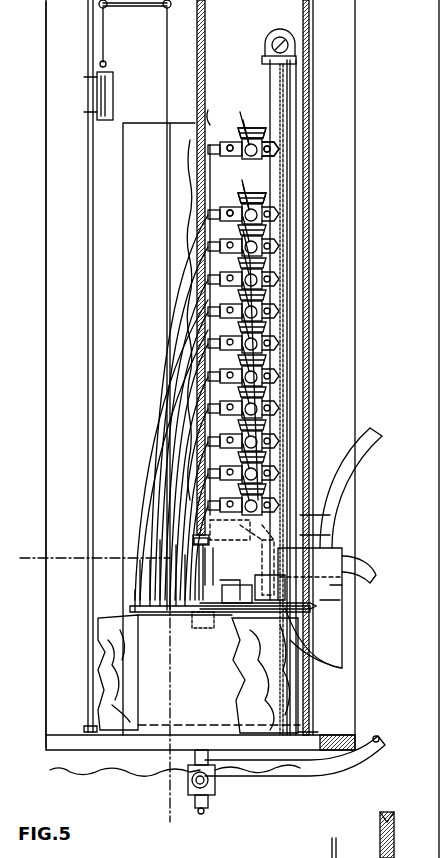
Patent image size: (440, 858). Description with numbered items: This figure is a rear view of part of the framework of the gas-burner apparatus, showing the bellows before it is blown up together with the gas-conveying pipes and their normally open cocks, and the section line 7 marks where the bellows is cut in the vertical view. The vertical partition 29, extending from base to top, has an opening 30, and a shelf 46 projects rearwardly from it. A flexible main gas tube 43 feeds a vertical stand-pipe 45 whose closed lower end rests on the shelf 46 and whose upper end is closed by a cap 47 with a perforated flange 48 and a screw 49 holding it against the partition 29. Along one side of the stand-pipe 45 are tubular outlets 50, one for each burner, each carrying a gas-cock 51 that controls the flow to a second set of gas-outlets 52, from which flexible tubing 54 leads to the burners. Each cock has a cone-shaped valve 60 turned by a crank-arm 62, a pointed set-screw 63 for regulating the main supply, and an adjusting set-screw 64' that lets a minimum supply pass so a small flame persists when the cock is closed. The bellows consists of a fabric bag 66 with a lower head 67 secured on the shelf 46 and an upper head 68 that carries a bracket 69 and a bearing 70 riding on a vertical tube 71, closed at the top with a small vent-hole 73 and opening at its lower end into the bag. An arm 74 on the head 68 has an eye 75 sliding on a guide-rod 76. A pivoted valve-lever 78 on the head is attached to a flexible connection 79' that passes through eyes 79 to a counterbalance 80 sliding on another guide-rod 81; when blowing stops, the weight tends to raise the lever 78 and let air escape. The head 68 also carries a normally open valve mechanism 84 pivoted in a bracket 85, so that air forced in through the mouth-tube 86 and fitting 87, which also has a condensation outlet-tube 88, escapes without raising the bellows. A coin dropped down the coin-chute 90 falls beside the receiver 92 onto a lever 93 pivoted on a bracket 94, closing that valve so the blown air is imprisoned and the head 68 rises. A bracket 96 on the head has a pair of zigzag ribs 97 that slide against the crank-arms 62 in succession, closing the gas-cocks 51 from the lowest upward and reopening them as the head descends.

The section line 7- 7 is at (91, 689).
The vertical partition 29 is at (439, 20).
The opening 30 is at (159, 429).
The main gas tube 43 is at (383, 578).
The stand-pipe 45 is at (283, 82).
The shelf 46 is at (283, 324).
The cap 47 is at (293, 62).
The perforated flange 48 is at (269, 36).
The screw 49 is at (286, 31).
The tubular outlets 50 is at (320, 170).
The gas-cock 51 is at (257, 130).
The gas-outlets 52 is at (226, 207).
The flexible tubing 54 is at (185, 368).
The cone-shaped valve 60 is at (268, 140).
The crank-arm 62 is at (235, 233).
The pointed set-screw 63 is at (230, 140).
The adjusting set-screw 64' is at (307, 144).
The bag 66 is at (323, 686).
The lower head 67 is at (92, 728).
The upper head 68 is at (135, 610).
The bracket 69 is at (190, 631).
The bearing 70 is at (197, 543).
The vertical tube 71 is at (205, 15).
The vent-hole 73 is at (208, 110).
The arm 74 is at (305, 625).
The eye 75 is at (272, 613).
The guide-rod 76 is at (313, 360).
The valve-lever 78 is at (135, 590).
The eyes 79 is at (135, 18).
The flexible connection 79' is at (235, 430).
The counterbalance 80 is at (113, 90).
The guide-rod 81 is at (93, 264).
The valve mechanism 84 is at (245, 620).
The bracket 85 is at (215, 612).
The mouth-tube 86 is at (305, 780).
The fitting 87 is at (215, 790).
The outlet-tube 88 is at (204, 812).
The coin-chute 90 is at (378, 450).
The receiver 92 is at (334, 553).
The lever 93 is at (342, 590).
The bracket 94 is at (330, 605).
The bracket 96 is at (300, 535).
The zigzag ribs 97 is at (300, 515).